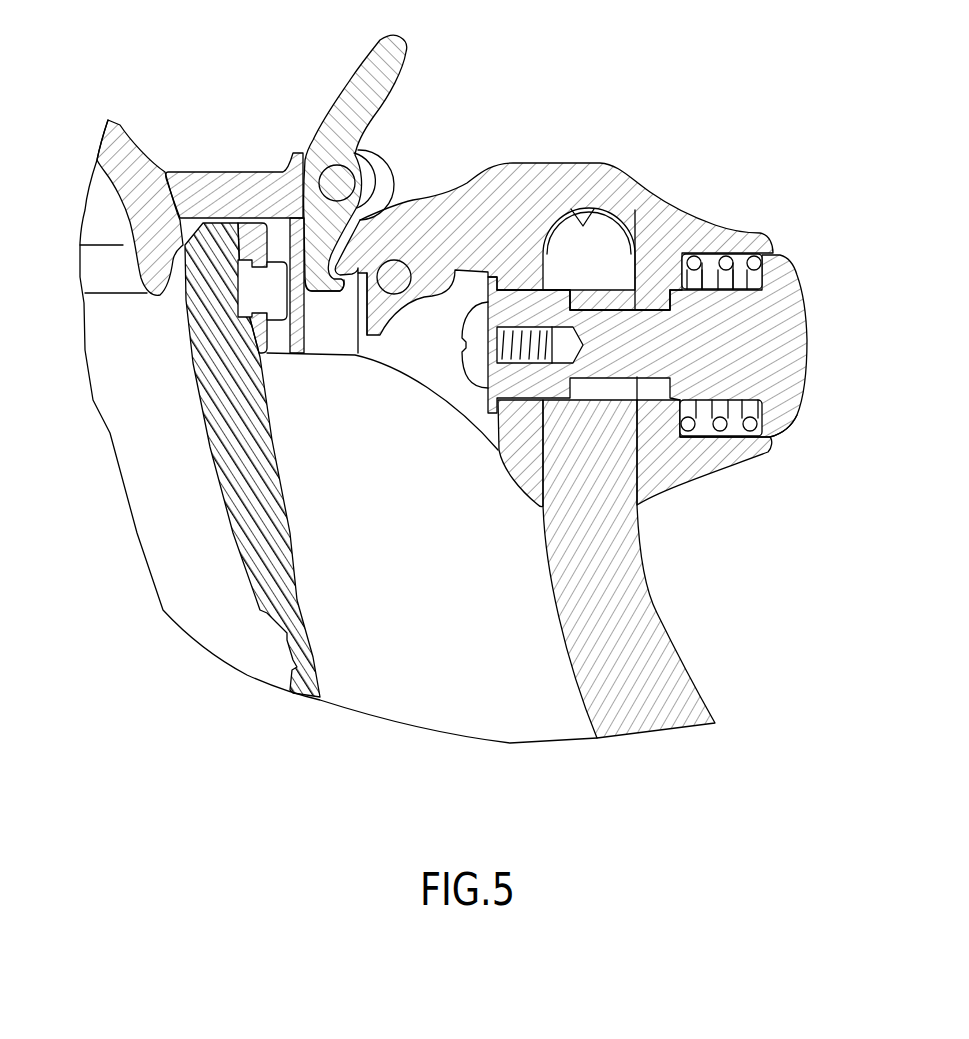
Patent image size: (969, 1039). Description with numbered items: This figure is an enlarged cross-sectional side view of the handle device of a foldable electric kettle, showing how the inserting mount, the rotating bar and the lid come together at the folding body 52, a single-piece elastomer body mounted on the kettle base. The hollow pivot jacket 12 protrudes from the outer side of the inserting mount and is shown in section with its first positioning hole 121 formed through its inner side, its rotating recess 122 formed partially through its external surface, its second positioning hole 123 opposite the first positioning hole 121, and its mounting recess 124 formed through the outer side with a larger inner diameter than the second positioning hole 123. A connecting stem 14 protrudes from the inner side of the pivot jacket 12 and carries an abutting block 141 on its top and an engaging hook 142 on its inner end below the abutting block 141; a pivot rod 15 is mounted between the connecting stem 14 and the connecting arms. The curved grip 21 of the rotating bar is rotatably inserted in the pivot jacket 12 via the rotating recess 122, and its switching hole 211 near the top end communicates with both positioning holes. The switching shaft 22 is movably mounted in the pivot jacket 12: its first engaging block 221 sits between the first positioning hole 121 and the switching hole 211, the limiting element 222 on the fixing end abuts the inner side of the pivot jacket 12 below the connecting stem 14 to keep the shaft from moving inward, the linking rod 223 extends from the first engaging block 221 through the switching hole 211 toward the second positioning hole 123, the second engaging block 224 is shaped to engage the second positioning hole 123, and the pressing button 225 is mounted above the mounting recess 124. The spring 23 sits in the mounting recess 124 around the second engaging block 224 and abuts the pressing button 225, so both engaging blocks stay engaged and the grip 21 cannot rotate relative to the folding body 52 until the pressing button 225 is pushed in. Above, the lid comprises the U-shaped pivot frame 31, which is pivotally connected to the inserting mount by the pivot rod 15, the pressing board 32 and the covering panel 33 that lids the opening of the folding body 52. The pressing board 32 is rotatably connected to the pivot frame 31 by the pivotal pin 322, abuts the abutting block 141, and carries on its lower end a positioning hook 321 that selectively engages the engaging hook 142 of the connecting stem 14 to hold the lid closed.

The pivot jacket 12 is at (537, 312).
The connecting stem 14 is at (382, 284).
The pivot rod 15 is at (395, 283).
The grip 21 is at (616, 557).
The switching shaft 22 is at (628, 306).
The spring 23 is at (727, 268).
The pivot frame 31 is at (233, 170).
The pressing board 32 is at (330, 187).
The covering panel 33 is at (120, 123).
The folding body 52 is at (291, 560).
The first positioning hole 121 is at (503, 425).
The rotating recess 122 is at (582, 224).
The second positioning hole 123 is at (640, 395).
The mounting recess 124 is at (738, 432).
The abutting block 141 is at (366, 220).
The engaging hook 142 is at (356, 330).
The switching hole 211 is at (606, 400).
The first engaging block 221 is at (530, 296).
The limiting element 222 is at (477, 362).
The linking rod 223 is at (612, 310).
The second engaging block 224 is at (707, 292).
The pressing button 225 is at (784, 421).
The positioning hook 321 is at (329, 291).
The pivotal pin 322 is at (333, 182).